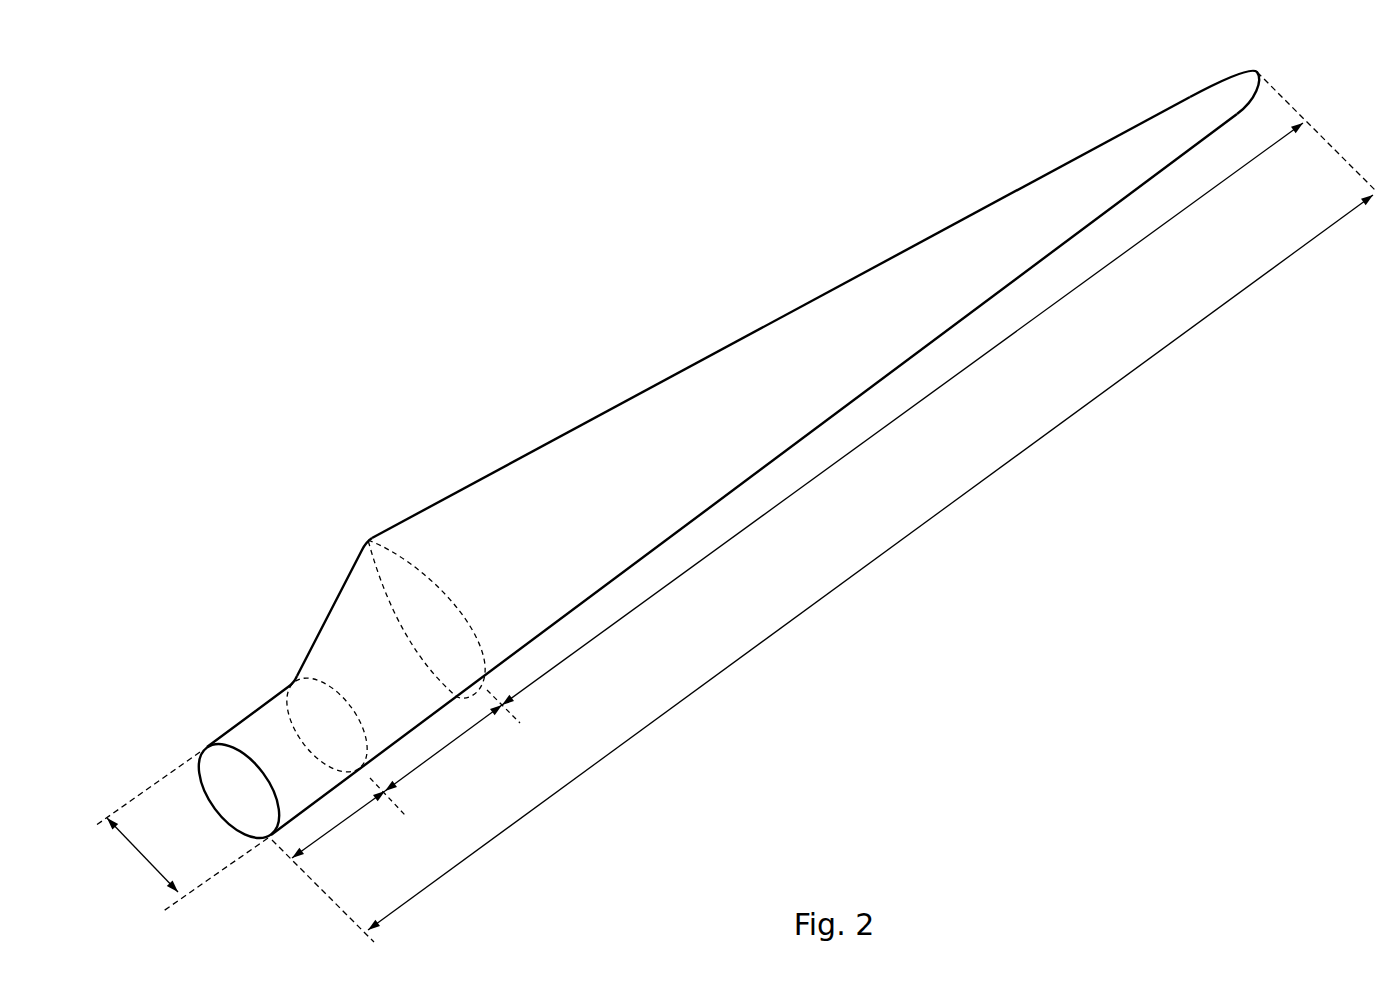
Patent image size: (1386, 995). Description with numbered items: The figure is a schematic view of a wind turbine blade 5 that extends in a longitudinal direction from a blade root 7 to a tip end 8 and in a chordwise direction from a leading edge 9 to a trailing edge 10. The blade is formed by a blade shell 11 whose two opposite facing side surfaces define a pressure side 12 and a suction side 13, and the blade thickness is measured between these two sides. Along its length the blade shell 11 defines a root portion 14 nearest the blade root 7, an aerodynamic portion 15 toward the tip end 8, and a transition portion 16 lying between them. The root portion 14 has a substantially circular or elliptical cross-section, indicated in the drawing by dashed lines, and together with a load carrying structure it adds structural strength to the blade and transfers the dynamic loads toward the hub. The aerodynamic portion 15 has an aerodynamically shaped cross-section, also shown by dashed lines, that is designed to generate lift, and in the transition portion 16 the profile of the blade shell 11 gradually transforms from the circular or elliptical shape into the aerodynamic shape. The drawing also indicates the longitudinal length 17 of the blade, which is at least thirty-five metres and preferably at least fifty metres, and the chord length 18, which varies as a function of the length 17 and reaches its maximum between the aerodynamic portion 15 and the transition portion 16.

The wind turbine blade 5 is at (707, 436).
The blade root 7 is at (234, 805).
The tip end 8 is at (1257, 72).
The leading edge 9 is at (940, 338).
The trailing edge 10 is at (947, 228).
The blade shell 11 is at (710, 374).
The pressure side 12 is at (382, 592).
The suction side 13 is at (823, 374).
The root portion 14 is at (342, 823).
The aerodynamic portion 15 is at (820, 474).
The transition portion 16 is at (433, 755).
The longitudinal length 17 is at (782, 628).
The chord length 18 is at (150, 868).